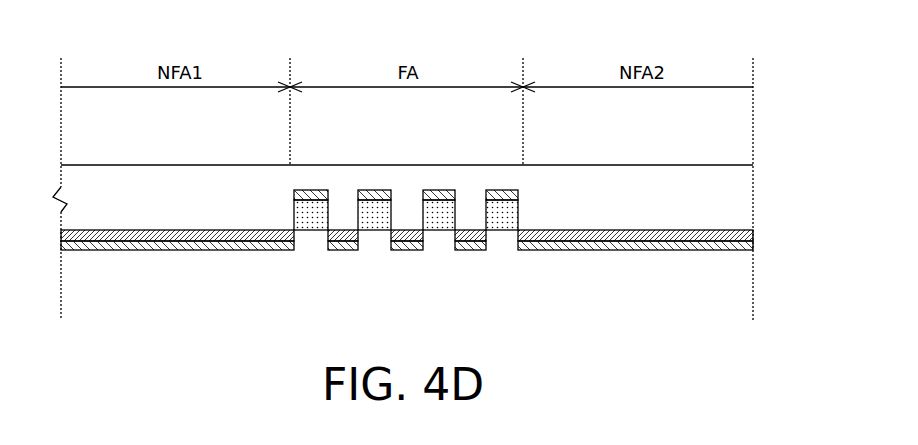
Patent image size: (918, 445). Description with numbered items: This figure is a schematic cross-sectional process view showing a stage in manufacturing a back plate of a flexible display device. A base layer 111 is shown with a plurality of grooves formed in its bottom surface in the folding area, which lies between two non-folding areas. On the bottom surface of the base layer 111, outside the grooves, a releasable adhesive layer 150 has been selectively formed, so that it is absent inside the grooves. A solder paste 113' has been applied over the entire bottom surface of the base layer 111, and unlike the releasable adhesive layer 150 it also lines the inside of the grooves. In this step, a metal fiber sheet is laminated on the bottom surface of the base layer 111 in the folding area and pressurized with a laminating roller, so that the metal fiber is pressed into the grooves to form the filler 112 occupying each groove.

The base layer 111 is at (733, 202).
The releasable adhesive layer 150 is at (753, 238).
The solder paste 113' is at (440, 194).
The filler 112 is at (500, 222).